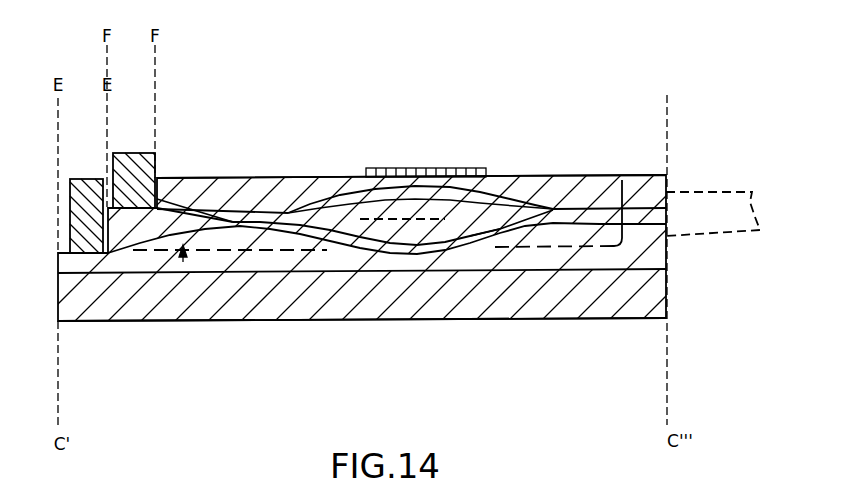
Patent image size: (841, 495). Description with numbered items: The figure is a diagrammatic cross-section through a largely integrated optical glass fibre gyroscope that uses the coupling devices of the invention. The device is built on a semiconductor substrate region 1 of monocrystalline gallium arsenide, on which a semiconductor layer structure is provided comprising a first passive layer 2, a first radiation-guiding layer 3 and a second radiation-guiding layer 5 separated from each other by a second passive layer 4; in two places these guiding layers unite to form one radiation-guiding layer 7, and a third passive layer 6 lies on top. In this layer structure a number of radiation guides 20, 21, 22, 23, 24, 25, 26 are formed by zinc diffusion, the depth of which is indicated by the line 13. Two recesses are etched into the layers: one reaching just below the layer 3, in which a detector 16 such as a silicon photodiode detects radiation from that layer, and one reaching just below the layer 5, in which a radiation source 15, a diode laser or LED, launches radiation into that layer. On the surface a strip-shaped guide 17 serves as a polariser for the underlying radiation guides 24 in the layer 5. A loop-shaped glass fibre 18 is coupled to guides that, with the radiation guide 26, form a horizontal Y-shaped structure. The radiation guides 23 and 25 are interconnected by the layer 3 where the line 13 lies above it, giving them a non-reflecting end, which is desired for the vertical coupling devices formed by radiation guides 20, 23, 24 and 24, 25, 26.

The semiconductor substrate region 1 is at (656, 302).
The first passive layer 2 is at (653, 251).
The first radiation-guiding layer 3 is at (397, 255).
The second passive layer 4 is at (503, 226).
The second radiation-guiding layer 5 is at (350, 203).
The third passive layer 6 is at (640, 184).
The radiation-guiding layer 7 is at (581, 220).
The line 13 is at (181, 262).
The radiation source 15 is at (137, 153).
The detector 16 is at (83, 179).
The strip-shaped guide 17 is at (408, 168).
The loop-shaped glass fibre 18 is at (707, 190).
The radiation guide 20 is at (252, 205).
The radiation guide 21 is at (212, 203).
The radiation guide 22 is at (176, 205).
The radiation guide 23 is at (312, 204).
The radiation guide 24 is at (482, 217).
The radiation guide 25 is at (528, 217).
The radiation guide 26 is at (578, 220).